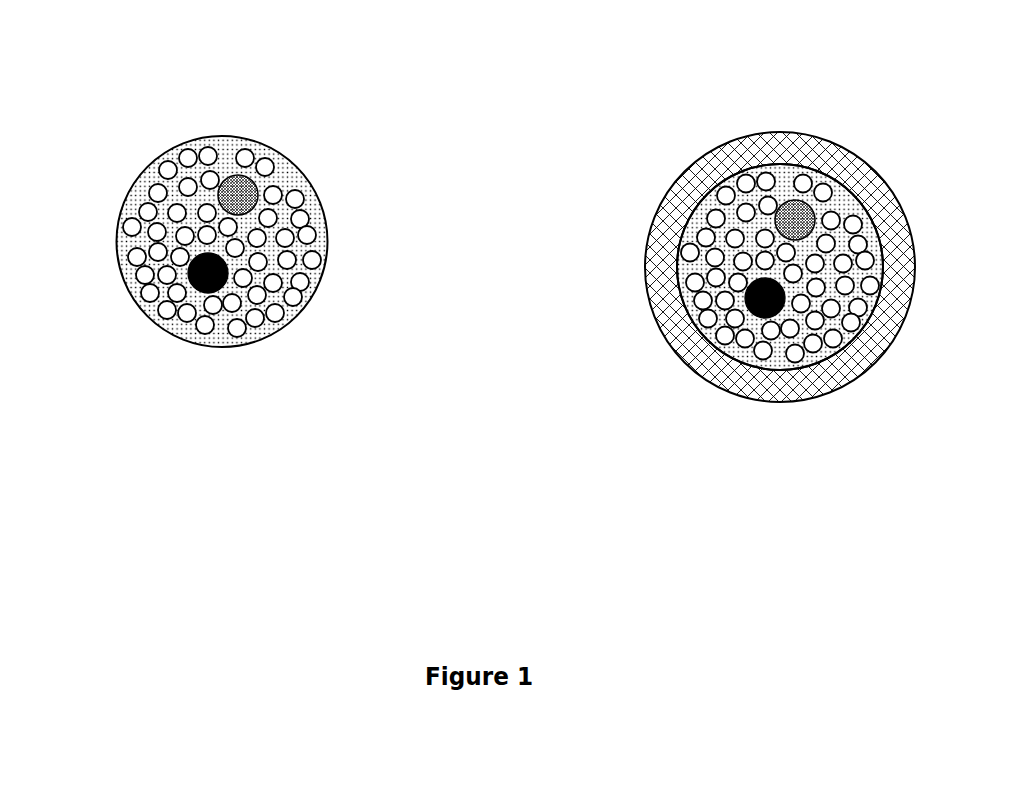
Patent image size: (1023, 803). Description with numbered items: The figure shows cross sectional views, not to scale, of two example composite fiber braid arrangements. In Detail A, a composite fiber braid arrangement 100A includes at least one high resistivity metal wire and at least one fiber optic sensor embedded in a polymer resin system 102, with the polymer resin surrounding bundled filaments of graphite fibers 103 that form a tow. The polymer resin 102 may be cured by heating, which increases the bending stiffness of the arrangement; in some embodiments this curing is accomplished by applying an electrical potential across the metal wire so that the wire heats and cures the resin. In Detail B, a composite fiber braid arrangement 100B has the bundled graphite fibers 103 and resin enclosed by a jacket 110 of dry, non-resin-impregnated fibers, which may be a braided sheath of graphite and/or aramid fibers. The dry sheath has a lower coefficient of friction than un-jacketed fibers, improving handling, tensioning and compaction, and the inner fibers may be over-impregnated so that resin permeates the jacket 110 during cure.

The composite fiber braid arrangement 100A is at (198, 122).
The composite fiber braid arrangement 100B is at (693, 126).
The polymer resin system 102 is at (315, 213).
The graphite fibers 103 is at (316, 263).
The jacket 110 is at (905, 270).